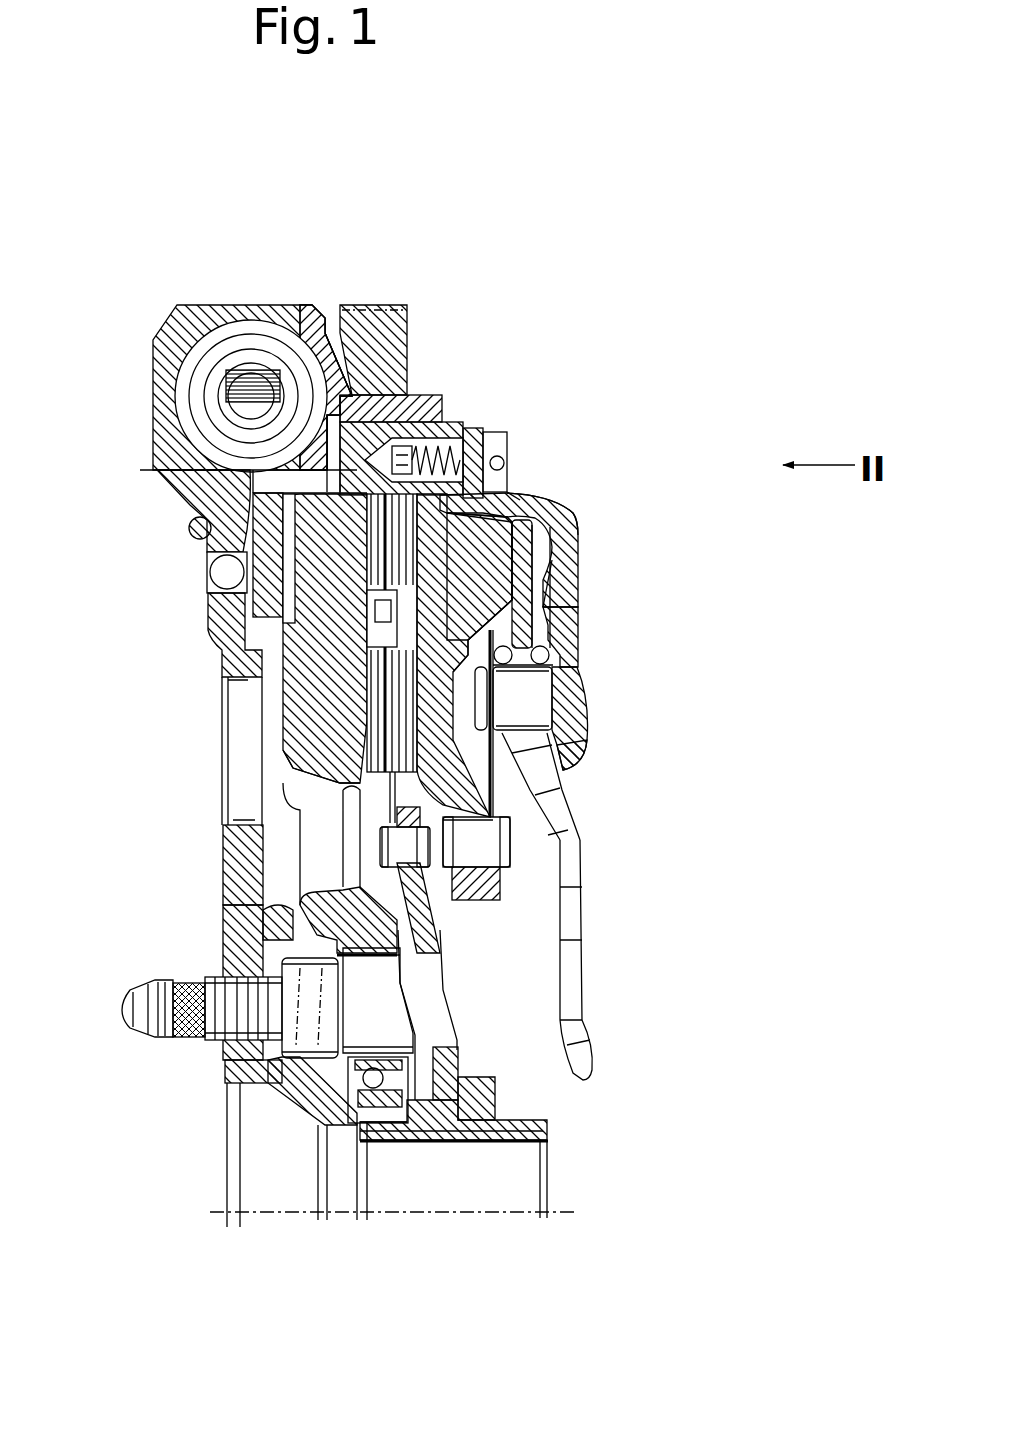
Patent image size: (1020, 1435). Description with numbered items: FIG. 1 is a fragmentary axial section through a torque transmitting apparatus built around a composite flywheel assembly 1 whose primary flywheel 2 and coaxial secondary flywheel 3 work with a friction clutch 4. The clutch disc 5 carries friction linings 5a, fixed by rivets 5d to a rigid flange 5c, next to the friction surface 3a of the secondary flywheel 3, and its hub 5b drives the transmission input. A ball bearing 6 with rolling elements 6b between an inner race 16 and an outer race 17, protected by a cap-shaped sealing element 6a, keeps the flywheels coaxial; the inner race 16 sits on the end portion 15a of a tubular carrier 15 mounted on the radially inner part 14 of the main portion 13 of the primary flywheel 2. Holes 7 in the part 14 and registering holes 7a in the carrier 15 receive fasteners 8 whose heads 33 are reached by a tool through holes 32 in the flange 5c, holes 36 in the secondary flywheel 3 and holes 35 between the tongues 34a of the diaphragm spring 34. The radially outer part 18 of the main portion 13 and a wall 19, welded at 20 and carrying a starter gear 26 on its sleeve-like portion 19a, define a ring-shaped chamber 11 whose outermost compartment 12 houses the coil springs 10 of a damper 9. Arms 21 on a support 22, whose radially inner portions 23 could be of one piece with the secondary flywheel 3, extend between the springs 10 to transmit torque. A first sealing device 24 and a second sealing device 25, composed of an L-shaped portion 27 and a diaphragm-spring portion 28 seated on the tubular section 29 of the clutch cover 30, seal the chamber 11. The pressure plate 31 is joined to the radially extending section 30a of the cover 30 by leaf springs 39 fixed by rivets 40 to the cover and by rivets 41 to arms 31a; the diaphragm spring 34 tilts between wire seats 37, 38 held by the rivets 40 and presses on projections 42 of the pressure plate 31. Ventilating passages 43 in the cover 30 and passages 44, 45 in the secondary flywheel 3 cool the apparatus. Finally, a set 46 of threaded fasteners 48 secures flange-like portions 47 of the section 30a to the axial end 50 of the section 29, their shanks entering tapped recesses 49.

The composite flywheel assembly 1 is at (230, 278).
The primary flywheel 2 is at (240, 950).
The secondary flywheel 3 is at (300, 712).
The annular friction surface 3a is at (283, 750).
The friction clutch 4 is at (585, 500).
The clutch disc 5 is at (455, 967).
The friction linings 5a is at (405, 718).
The hub 5b is at (490, 1080).
The flange 5c is at (440, 907).
The rivets 5d is at (533, 587).
The antifriction ball bearing 6 is at (357, 1037).
The sealing element 6a is at (457, 1143).
The rolling elements 6b is at (420, 1143).
The holes 7 is at (227, 1062).
The holes 7a is at (275, 1080).
The fasteners 8 is at (172, 1045).
The damper 9 is at (170, 335).
The energy storing elements 10 is at (185, 318).
The chamber 11 is at (190, 478).
The compartment 12 is at (250, 410).
The main portion 13 is at (233, 662).
The radially inner part 14 is at (243, 842).
The tubular carrier 15 is at (310, 1100).
The end portion 15a is at (400, 1148).
The inner race 16 is at (360, 1125).
The outer race 17 is at (487, 1078).
The radially outer part 18 is at (205, 312).
The wall 19 is at (340, 300).
The sleeve-like portion 19a is at (373, 390).
The weld 20 is at (292, 310).
The arms 21 is at (255, 390).
The support 22 is at (327, 470).
The radially inner portions 23 is at (250, 500).
The sealing device 24 is at (247, 633).
The second sealing device 25 is at (450, 425).
The starter gear 26 is at (380, 297).
The first annular portion 27 is at (418, 392).
The second portion 28 is at (358, 443).
The tubular section 29 is at (331, 400).
The clutch cover 30 is at (575, 517).
The radially extending section 30a is at (570, 623).
The pressure plate 31 is at (470, 535).
The arm 31a is at (470, 885).
The holes 32 is at (427, 998).
The head 33 is at (300, 1095).
The diaphragm spring 34 is at (523, 595).
The prongs 34a is at (557, 810).
The holes 35 is at (573, 985).
The holes 36 is at (387, 1025).
The seat 37 is at (549, 655).
The seat 38 is at (553, 673).
The leaf springs 39 is at (567, 763).
The rivets 40 is at (535, 702).
The rivet 41 is at (487, 843).
The projections 42 is at (490, 550).
The ventilating holes 43 is at (510, 488).
The ventilating holes 44 is at (207, 548).
The ventilating holes 45 is at (320, 862).
The set of threaded connecting elements 46 is at (466, 428).
The flange-like portions 47 is at (473, 455).
The threaded fasteners 48 is at (507, 445).
The tapped recesses 49 is at (504, 463).
The axial end 50 is at (488, 407).